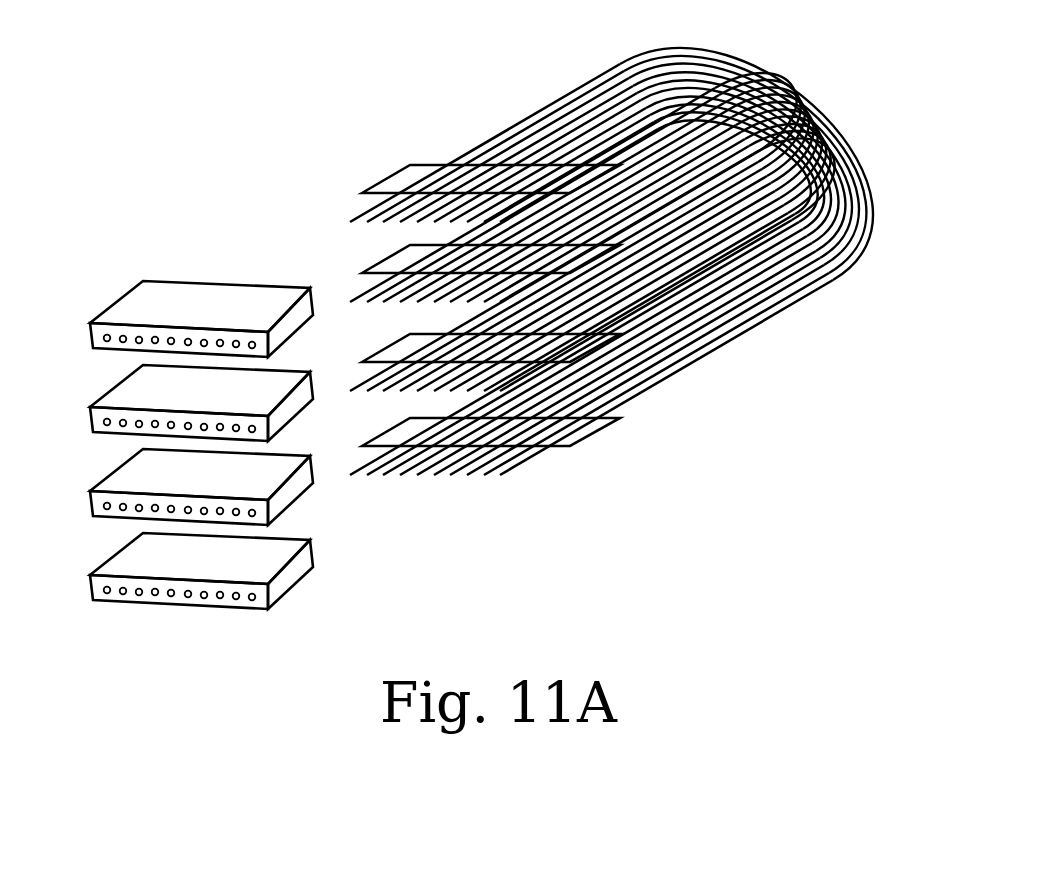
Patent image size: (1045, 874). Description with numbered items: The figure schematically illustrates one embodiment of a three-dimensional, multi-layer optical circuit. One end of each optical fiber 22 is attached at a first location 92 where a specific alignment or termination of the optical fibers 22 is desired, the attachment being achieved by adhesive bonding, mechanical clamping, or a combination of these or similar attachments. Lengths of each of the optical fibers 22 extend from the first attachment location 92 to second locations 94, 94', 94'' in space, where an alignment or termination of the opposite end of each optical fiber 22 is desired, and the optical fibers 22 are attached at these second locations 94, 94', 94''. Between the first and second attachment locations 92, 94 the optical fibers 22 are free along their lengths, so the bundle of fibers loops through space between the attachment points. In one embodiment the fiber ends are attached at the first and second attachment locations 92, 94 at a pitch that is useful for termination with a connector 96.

The optical fiber 22 is at (860, 253).
The first location 92 is at (409, 165).
The second location 94 is at (525, 195).
The second location 94' is at (564, 375).
The second location 94'' is at (591, 388).
The connector 96 is at (116, 300).